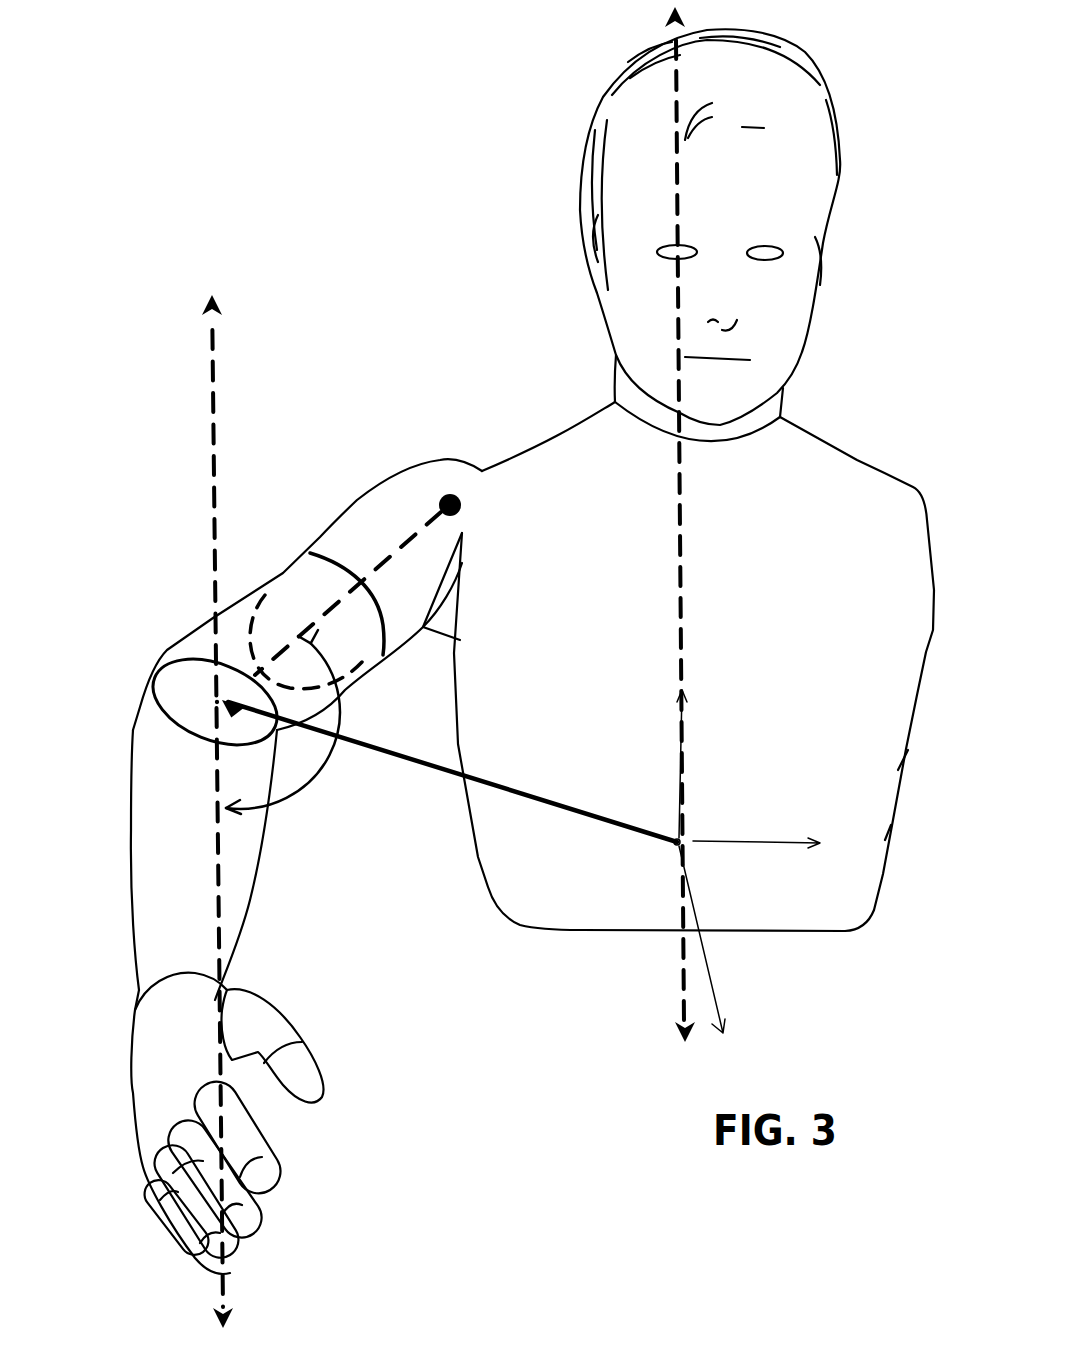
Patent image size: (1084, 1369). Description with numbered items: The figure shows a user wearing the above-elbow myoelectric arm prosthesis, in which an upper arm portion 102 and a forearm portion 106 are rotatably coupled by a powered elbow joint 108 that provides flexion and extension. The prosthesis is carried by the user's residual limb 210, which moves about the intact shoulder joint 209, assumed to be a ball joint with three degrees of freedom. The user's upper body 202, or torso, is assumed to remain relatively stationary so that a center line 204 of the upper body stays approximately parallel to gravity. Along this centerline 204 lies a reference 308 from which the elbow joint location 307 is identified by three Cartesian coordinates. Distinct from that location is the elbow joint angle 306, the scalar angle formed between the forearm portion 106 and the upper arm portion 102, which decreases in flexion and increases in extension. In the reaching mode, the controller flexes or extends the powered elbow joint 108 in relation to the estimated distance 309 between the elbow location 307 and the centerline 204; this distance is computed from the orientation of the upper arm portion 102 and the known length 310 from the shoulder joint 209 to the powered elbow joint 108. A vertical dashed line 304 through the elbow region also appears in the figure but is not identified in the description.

The upper arm portion 102 is at (247, 587).
The forearm portion 106 is at (132, 887).
The powered elbow joint 108 is at (153, 673).
The upper body 202 is at (860, 457).
The center line 204 is at (680, 987).
The shoulder joint 209 is at (447, 494).
The residual limb 210 is at (280, 580).
The elbow vertical axis 304 is at (212, 1278).
The elbow joint angular position 306 is at (293, 793).
The elbow joint location 307 is at (217, 702).
The reference 308 is at (675, 837).
The estimated distance 309 is at (417, 768).
The known length 310 is at (382, 557).